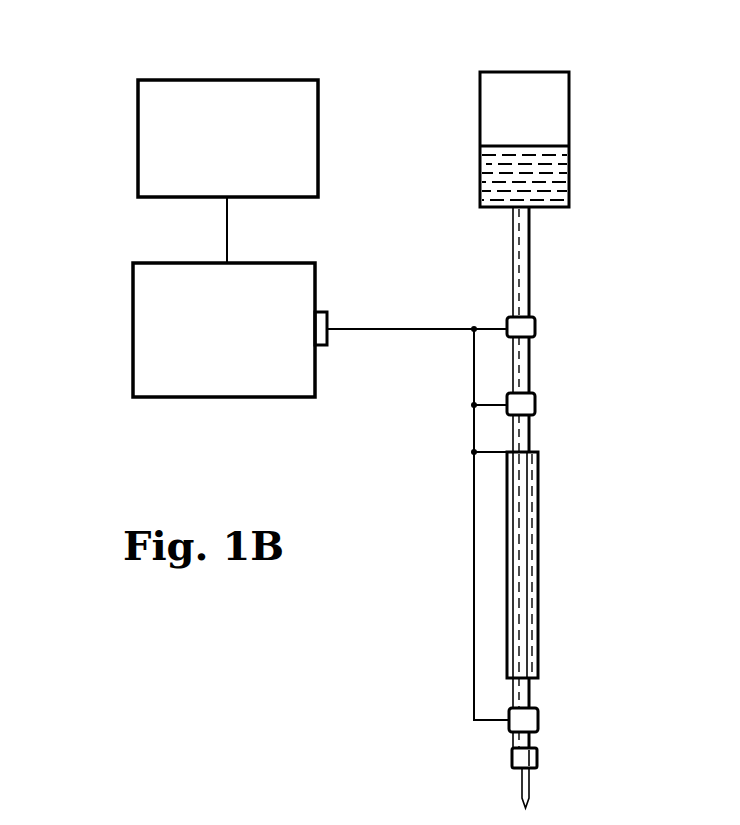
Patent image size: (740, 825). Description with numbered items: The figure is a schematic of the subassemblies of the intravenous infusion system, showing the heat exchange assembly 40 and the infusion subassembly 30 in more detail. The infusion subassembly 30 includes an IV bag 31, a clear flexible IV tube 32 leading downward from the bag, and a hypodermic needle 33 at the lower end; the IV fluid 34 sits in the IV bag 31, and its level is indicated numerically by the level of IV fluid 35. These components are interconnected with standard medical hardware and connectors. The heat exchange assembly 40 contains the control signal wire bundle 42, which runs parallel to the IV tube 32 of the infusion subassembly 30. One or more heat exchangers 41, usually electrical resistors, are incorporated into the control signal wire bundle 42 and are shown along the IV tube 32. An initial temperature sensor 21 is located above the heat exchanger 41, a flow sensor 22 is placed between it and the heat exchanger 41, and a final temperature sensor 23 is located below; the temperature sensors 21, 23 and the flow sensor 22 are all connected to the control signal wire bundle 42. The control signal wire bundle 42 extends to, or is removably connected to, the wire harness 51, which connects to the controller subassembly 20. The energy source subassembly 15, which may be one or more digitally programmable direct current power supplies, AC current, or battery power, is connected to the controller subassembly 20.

The energy source subassembly 15 is at (138, 93).
The controller subassembly 20 is at (133, 293).
The wire harness 51 is at (399, 328).
The control signal wire bundle 42 is at (474, 370).
The infusion subassembly 30 is at (572, 383).
The IV bag 31 is at (534, 97).
The level of IV fluid 35 is at (552, 144).
The IV fluid 34 is at (555, 177).
The IV tube 32 is at (530, 368).
The initial temperature sensor 21 is at (538, 327).
The flow sensor 22 is at (537, 407).
The heat exchange assembly 40 is at (521, 630).
The heat exchanger 41 is at (539, 558).
The final temperature sensor 23 is at (540, 720).
The hypodermic needle 33 is at (533, 790).